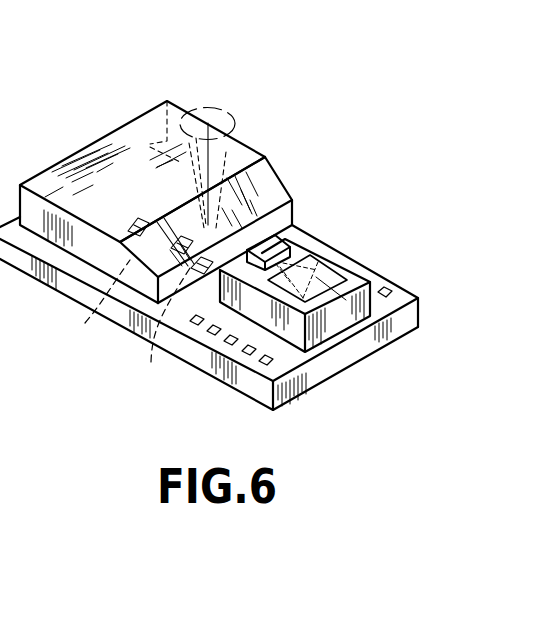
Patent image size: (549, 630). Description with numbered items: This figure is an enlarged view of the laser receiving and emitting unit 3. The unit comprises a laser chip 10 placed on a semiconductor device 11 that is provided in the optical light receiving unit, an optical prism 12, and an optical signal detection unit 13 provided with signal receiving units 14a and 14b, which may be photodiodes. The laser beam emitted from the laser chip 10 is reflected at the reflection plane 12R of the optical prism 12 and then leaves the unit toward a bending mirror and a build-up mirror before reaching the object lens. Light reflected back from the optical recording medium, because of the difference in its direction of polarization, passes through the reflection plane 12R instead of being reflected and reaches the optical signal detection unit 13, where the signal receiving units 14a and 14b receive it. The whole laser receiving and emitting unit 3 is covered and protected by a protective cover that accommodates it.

The laser receiving and emitting unit 3 is at (100, 82).
The laser chip 10 is at (270, 230).
The semiconductor device 11 is at (355, 259).
The optical prism 12 is at (245, 140).
The reflection plane 12R is at (267, 187).
The optical signal detection unit 13 is at (403, 283).
The signal receiving unit 14a is at (153, 334).
The signal receiving unit 14b is at (86, 309).